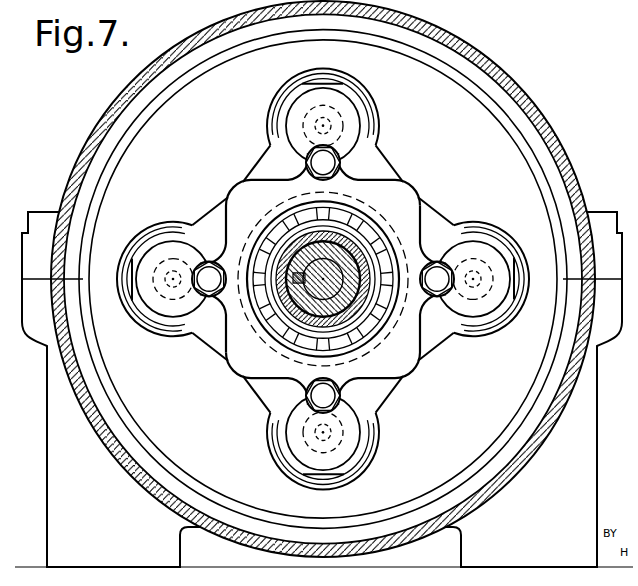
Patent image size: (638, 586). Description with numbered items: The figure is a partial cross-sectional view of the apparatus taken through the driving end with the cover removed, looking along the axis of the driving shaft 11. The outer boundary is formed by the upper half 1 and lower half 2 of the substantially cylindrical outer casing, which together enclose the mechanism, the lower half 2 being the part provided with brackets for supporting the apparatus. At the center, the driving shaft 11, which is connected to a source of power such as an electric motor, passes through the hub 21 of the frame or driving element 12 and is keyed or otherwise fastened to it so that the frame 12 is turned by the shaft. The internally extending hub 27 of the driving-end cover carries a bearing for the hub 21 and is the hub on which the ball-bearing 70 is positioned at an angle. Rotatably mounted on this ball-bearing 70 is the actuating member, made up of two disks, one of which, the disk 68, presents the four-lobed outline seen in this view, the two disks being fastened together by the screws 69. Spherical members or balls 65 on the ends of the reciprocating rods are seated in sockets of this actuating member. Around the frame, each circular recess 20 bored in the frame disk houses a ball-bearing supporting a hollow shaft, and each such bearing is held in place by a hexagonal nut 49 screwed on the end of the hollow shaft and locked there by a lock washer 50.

The upper half of outer casing 1 is at (322, 279).
The lower half of outer casing 2 is at (107, 252).
The driving shaft 11 is at (355, 237).
The frame or driving element 12 is at (334, 279).
The circular recess 20 is at (323, 278).
The hub 21 is at (291, 333).
The internally extending hub of cover 27 is at (285, 282).
The hexagonal nut 49 is at (323, 279).
The lock washer 50 is at (342, 279).
The spherical member or ball 65 is at (338, 278).
The disk of actuating member 68 is at (339, 278).
The screw 69 is at (323, 310).
The ball-bearing 70 is at (242, 338).